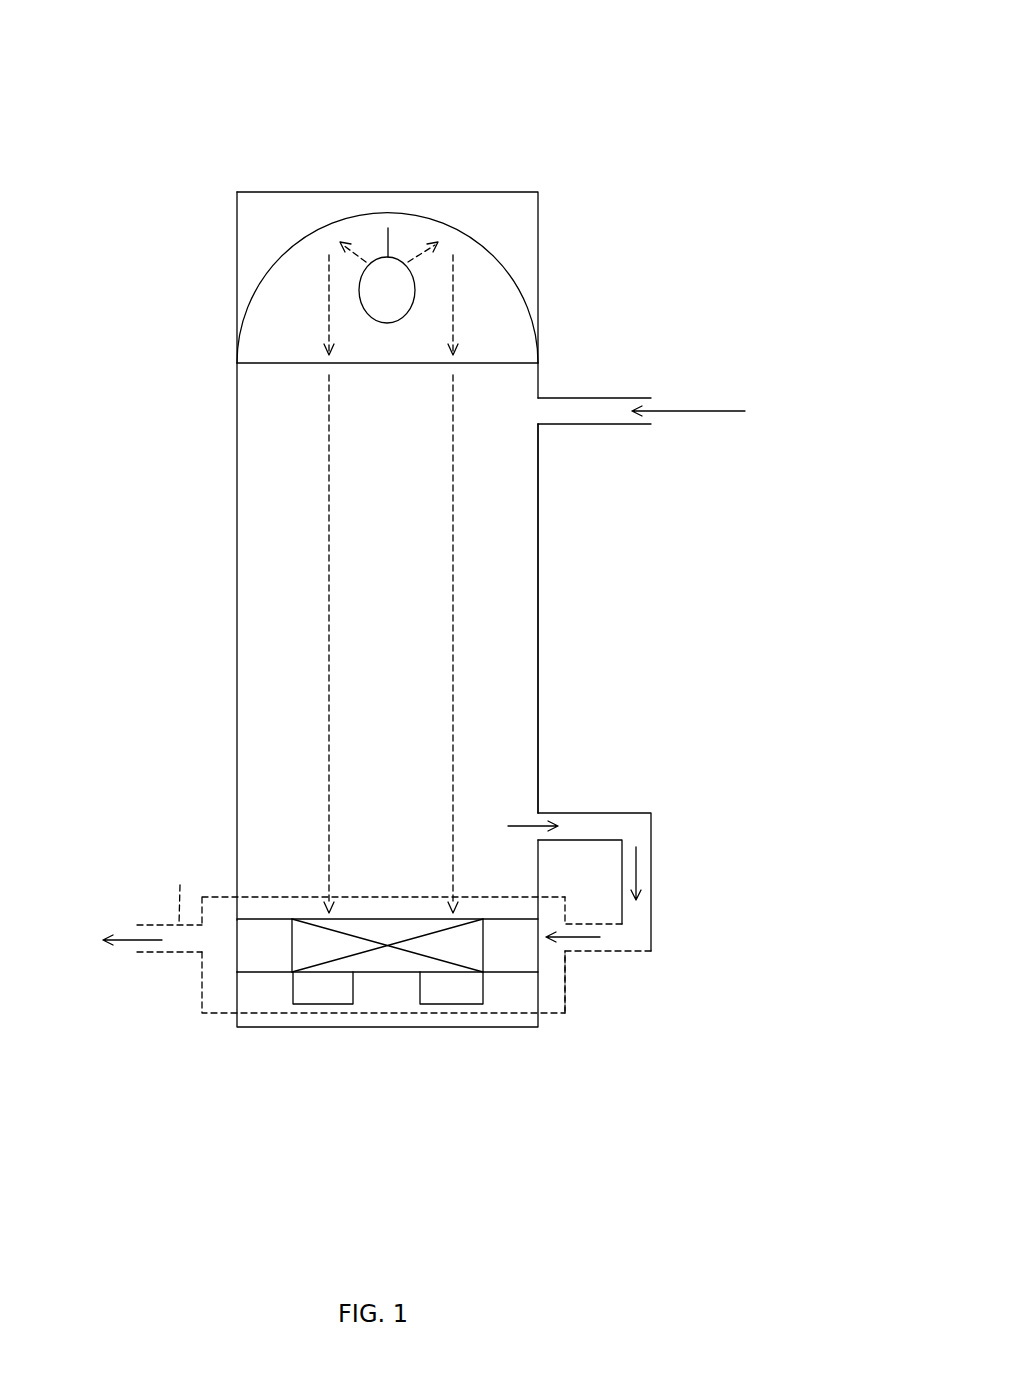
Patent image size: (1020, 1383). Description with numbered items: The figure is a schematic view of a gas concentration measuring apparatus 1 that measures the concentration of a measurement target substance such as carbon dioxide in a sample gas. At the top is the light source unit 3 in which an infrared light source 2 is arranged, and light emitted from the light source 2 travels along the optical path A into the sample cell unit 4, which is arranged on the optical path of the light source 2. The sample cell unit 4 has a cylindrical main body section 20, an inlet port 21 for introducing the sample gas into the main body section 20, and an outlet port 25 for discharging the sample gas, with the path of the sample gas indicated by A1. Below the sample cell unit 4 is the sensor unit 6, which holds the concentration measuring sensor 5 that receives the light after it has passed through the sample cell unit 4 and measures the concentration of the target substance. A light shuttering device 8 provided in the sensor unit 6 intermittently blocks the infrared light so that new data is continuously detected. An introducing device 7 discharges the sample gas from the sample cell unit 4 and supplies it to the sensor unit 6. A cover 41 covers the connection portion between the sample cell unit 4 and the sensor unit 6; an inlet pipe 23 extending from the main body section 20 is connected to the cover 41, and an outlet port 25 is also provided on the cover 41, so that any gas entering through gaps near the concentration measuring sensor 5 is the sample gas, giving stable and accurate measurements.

The gas concentration measuring apparatus 1 is at (583, 213).
The light source 2 is at (396, 286).
The light source unit 3 is at (278, 192).
The sample cell unit 4 is at (237, 463).
The concentration measuring sensor 5 is at (322, 1004).
The sensor unit 6 is at (236, 1013).
The introducing device 7 is at (552, 1013).
The light shuttering device 8 is at (390, 972).
The main body section 20 is at (540, 597).
The inlet port 21 is at (590, 398).
The inlet pipe 23 is at (651, 872).
The outlet port 25 is at (180, 885).
The cover 41 is at (205, 946).
The optical path A is at (328, 663).
The path of the sample gas A1 is at (687, 411).